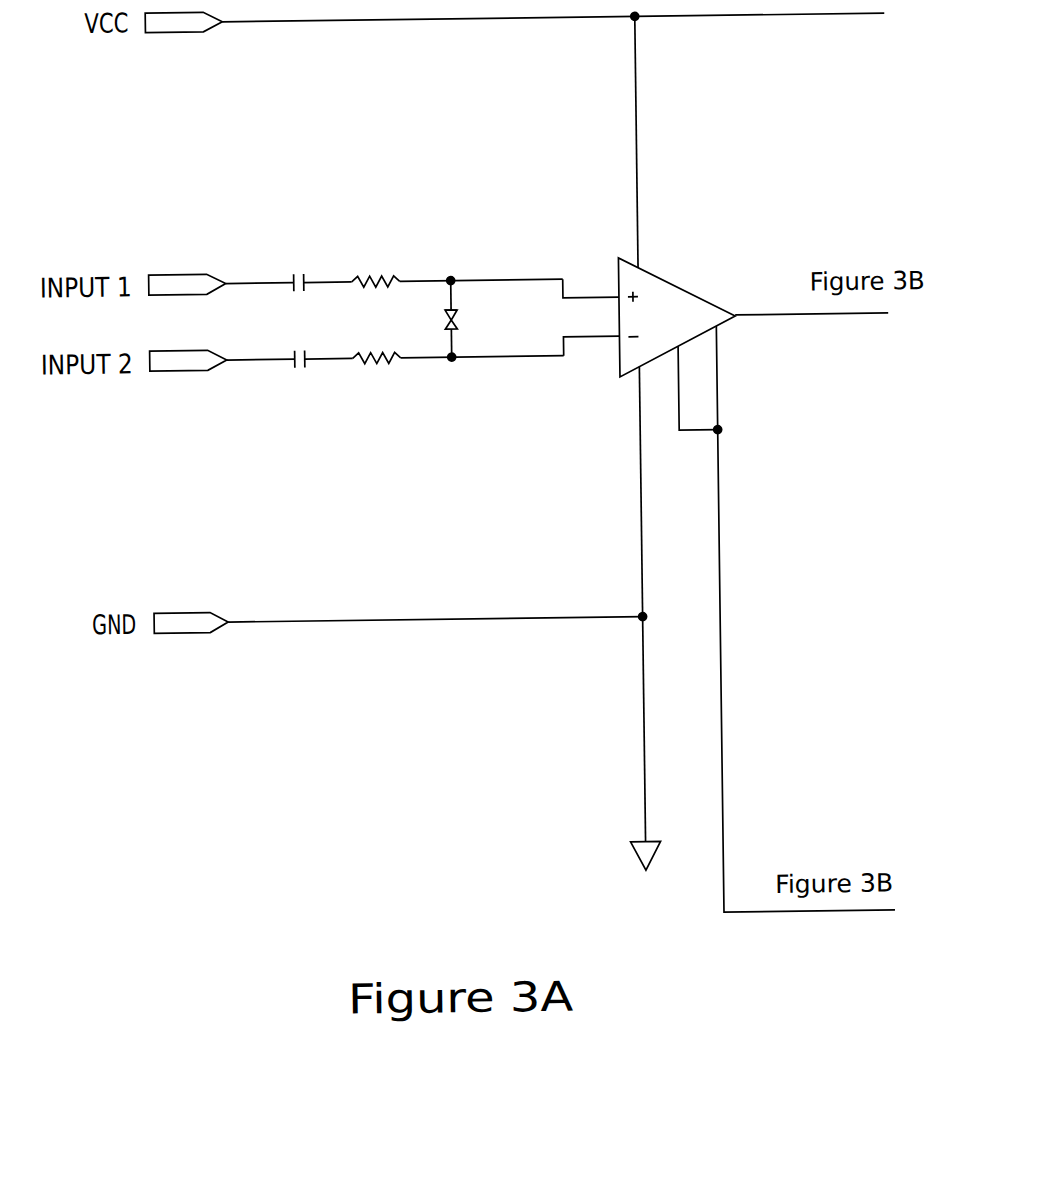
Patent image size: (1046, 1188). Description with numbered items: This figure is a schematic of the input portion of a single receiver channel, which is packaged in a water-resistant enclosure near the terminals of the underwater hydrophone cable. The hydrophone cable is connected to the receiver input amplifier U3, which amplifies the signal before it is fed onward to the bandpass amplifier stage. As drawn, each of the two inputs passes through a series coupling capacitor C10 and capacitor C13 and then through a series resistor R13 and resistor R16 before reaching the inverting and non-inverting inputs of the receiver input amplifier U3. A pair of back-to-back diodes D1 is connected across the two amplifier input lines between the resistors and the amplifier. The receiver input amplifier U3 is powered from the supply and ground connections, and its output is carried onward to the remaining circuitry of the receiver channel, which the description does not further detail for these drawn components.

The capacitor C10 (1 uF) C10 is at (317, 285).
The capacitor C13 (1 uF) C13 is at (318, 361).
The resistor R13 (500 ohm) R13 is at (457, 284).
The resistor R16 (500 ohm) R16 is at (458, 360).
The zener diodes D1 (1N4732) D1 is at (512, 335).
The receiver input amplifier U3 is at (670, 309).